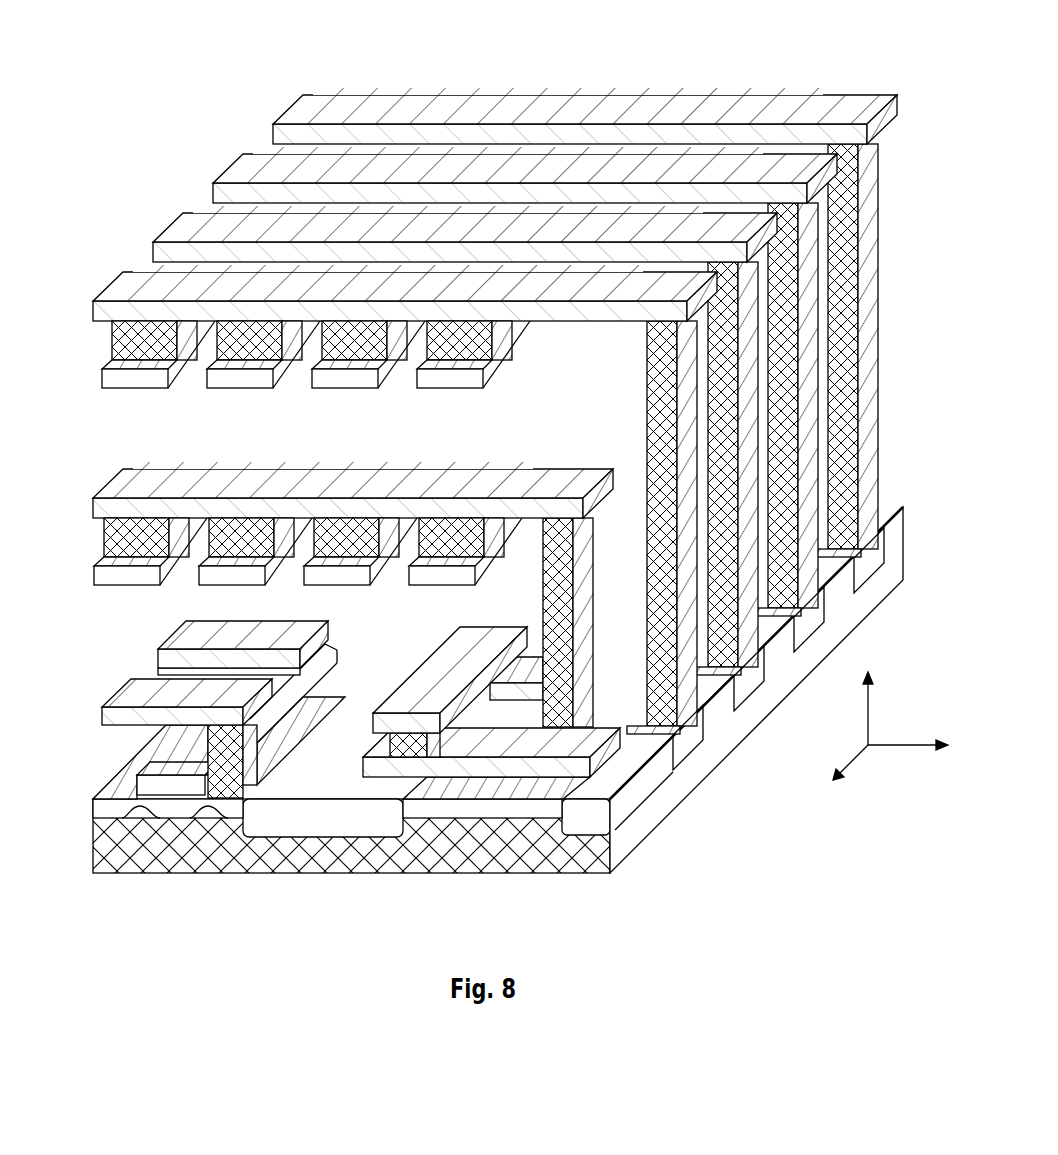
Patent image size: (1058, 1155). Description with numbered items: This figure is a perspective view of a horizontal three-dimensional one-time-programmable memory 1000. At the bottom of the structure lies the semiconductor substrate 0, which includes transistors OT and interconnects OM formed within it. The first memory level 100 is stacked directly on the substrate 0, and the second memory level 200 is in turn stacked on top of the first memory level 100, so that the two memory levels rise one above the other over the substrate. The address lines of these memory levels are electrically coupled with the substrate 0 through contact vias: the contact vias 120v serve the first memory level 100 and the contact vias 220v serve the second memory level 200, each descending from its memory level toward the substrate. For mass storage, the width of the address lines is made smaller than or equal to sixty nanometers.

The horizontal 3D-OTP 1000 is at (501, 436).
The second memory level 200 is at (495, 391).
The first memory level 100 is at (353, 569).
The contact via 220v is at (667, 446).
The contact via 120v is at (541, 622).
The interconnects OM is at (101, 714).
The transistors OT is at (98, 806).
The semiconductor substrate 0 is at (498, 690).